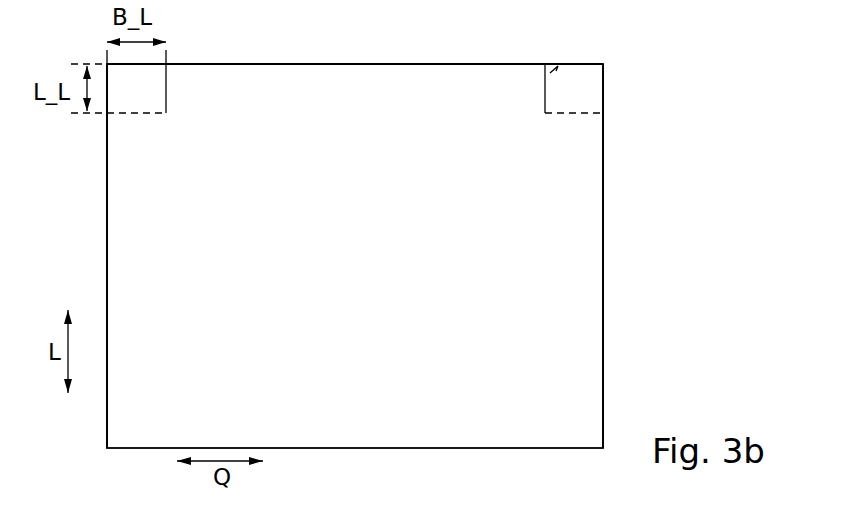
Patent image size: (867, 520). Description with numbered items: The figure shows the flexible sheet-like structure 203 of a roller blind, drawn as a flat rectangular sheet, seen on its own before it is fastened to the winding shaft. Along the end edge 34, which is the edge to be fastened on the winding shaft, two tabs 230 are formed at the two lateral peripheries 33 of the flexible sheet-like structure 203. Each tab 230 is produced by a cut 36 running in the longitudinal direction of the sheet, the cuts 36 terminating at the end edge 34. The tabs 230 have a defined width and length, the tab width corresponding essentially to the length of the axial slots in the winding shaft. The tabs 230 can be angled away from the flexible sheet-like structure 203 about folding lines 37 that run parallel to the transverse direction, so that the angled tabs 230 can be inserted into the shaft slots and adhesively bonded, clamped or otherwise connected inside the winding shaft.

The flexible sheet-like structure 203 is at (624, 226).
The end edge 34 is at (295, 63).
The lateral peripheries 33 is at (107, 263).
The cuts 36 is at (167, 108).
The tabs 230 is at (138, 98).
The folding lines 37 is at (568, 113).